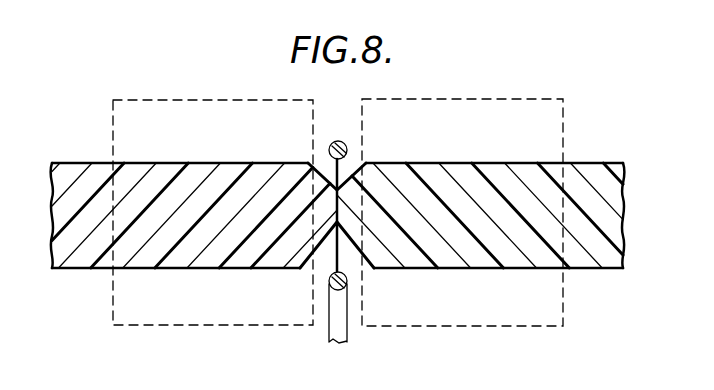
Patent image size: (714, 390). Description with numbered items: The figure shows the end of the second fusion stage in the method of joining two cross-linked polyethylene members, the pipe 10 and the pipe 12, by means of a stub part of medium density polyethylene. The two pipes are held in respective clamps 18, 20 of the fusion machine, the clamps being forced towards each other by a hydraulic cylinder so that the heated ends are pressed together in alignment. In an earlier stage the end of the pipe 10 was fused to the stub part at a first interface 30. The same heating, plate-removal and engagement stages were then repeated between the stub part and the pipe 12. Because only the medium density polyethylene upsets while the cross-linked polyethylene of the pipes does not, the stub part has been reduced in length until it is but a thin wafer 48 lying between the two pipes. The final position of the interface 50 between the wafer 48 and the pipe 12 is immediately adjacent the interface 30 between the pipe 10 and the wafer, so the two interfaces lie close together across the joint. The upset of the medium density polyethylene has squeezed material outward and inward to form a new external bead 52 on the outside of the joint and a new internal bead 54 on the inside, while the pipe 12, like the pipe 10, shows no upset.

The pipe 10 is at (206, 172).
The pipe 12 is at (469, 173).
The clamp 18 is at (111, 127).
The clamp 20 is at (566, 125).
The first interface 30 is at (322, 185).
The thin wafer 48 is at (348, 272).
The interface 50 is at (352, 185).
The external bead 52 is at (345, 145).
The internal bead 54 is at (329, 297).